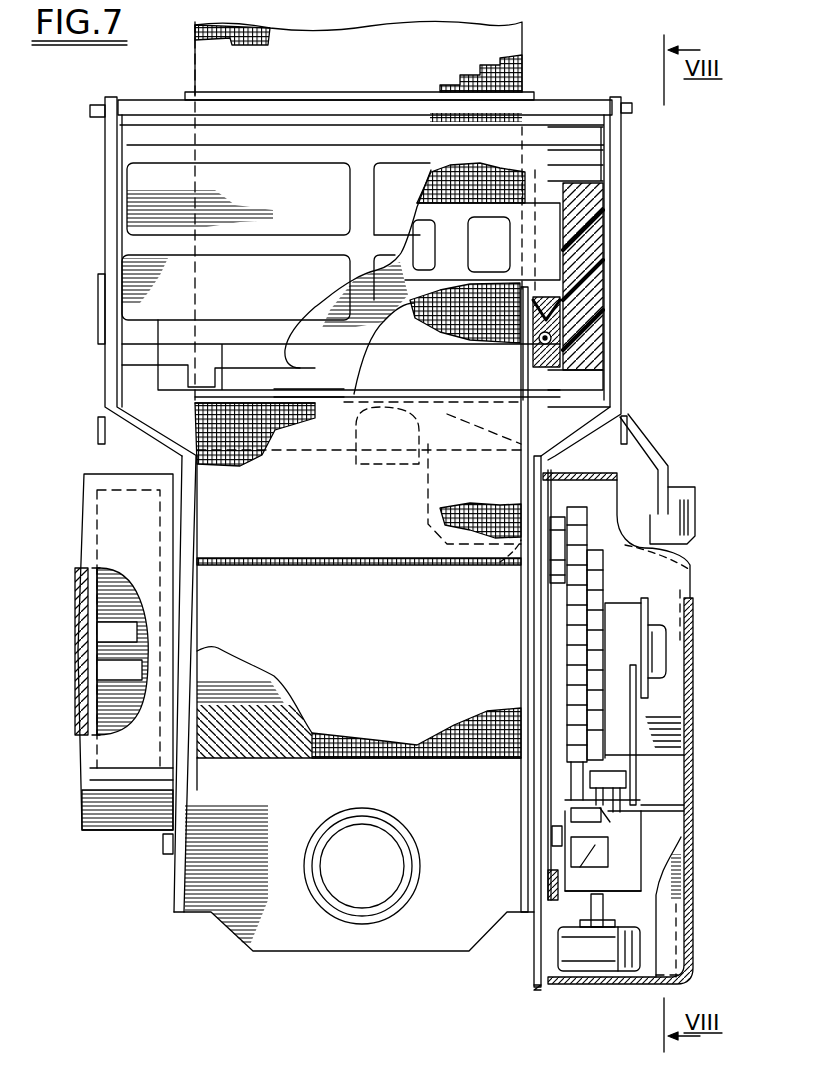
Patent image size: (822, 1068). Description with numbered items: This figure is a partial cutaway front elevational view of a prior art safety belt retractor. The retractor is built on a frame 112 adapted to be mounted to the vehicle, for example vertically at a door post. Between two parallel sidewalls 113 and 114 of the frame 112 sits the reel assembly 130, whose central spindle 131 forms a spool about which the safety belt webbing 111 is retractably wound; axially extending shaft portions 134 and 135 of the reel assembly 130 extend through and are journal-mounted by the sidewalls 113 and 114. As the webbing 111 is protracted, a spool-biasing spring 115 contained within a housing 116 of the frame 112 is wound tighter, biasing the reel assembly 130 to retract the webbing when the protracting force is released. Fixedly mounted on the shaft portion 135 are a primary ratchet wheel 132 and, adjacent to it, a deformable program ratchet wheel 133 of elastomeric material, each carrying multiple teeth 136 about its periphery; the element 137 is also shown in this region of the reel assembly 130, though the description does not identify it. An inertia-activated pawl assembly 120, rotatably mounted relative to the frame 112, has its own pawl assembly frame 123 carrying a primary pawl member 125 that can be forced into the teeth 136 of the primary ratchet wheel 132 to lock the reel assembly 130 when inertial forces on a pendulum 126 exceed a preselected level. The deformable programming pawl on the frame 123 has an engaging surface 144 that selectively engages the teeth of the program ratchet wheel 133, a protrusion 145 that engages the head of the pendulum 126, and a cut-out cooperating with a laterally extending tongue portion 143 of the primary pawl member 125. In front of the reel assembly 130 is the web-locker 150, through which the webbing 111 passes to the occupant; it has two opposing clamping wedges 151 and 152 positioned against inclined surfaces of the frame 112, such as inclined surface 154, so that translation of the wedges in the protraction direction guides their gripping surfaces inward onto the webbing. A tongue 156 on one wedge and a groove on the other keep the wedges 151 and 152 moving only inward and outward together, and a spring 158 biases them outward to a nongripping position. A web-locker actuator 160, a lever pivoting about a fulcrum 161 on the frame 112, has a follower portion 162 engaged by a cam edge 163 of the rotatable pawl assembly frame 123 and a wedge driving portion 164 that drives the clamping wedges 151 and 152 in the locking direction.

The safety belt webbing 111 is at (220, 60).
The frame 112 is at (616, 174).
The sidewall 113 is at (190, 532).
The sidewall 114 is at (545, 500).
The spool-biasing spring 115 is at (124, 652).
The housing 116 is at (130, 835).
The inertia-activated pawl assembly 120 is at (672, 785).
The pawl assembly frame 123 is at (636, 722).
The primary pawl member 125 is at (560, 836).
The pendulum 126 is at (607, 955).
The reel assembly 130 is at (258, 786).
The central spindle 131 is at (228, 662).
The primary ratchet wheel 132 is at (560, 775).
The deformable program ratchet wheel 133 is at (590, 636).
The shaft portion 134 is at (190, 612).
The shaft portion 135 is at (652, 620).
The teeth 136 is at (548, 800).
The gear 137 is at (597, 662).
The tongue portion 143 is at (600, 818).
The engaging surface 144 is at (612, 770).
The protrusion 145 is at (605, 853).
The web-locker 150 is at (632, 227).
The clamping wedge 151 is at (545, 212).
The clamping wedge 152 is at (332, 407).
The inclined surface 154 is at (140, 188).
The tongue 156 is at (560, 302).
The spring 158 is at (552, 343).
The web-locker actuator 160 is at (435, 500).
The fulcrum 161 is at (665, 482).
The follower portion 162 is at (582, 524).
The cam edge 163 is at (510, 548).
The wedge driving portion 164 is at (398, 470).